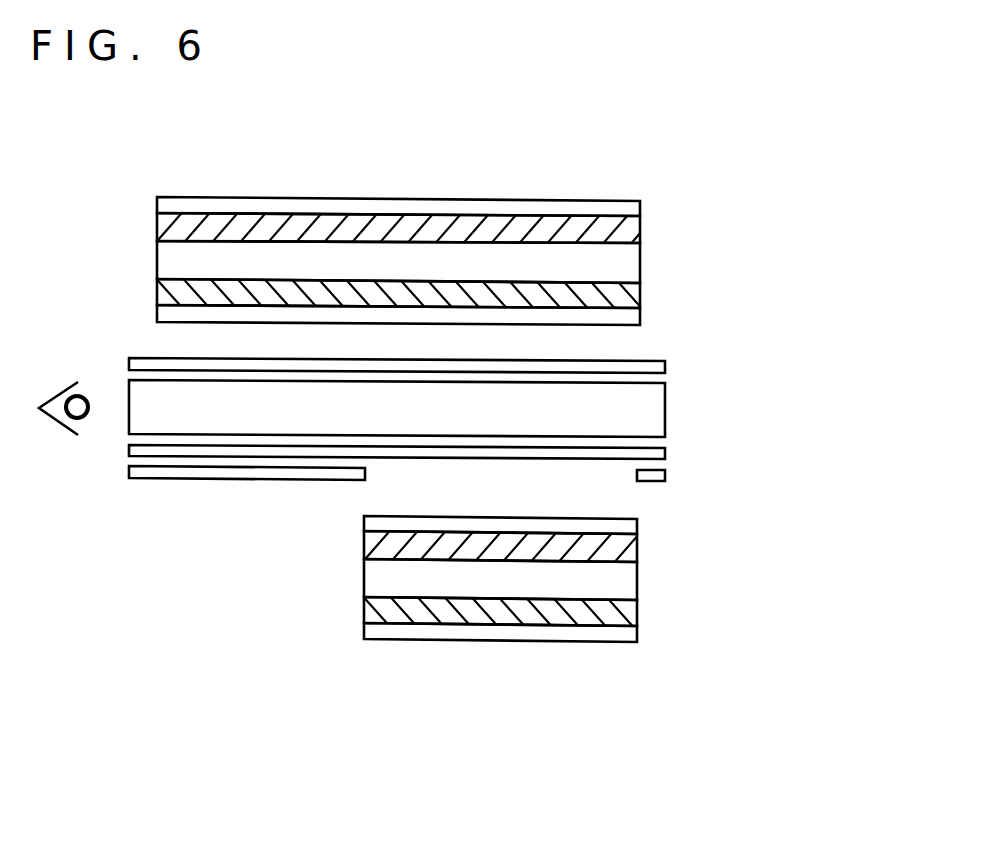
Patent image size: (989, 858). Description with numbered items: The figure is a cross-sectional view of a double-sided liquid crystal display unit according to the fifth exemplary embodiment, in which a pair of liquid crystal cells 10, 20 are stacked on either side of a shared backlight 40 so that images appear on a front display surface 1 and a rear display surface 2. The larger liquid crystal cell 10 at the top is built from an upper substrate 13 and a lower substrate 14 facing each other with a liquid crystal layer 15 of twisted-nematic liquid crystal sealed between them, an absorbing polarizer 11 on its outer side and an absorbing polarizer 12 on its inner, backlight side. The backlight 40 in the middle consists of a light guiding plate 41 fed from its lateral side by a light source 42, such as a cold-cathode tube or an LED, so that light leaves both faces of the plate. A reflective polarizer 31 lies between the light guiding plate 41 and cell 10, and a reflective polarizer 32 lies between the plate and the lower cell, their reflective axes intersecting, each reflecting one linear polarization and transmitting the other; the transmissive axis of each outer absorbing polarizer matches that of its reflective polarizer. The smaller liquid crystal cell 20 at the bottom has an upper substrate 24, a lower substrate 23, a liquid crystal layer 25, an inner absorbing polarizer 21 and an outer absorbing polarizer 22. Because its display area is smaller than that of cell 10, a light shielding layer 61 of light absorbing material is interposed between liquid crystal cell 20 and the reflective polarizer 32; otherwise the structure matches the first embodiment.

The display surface 1 is at (505, 225).
The liquid crystal cell 10 is at (505, 262).
The absorbing polarizer 11 is at (613, 207).
The absorbing polarizer 12 is at (468, 318).
The upper substrate 13 is at (613, 228).
The lower substrate 14 is at (613, 297).
The liquid crystal layer 15 is at (613, 265).
The display surface 2 is at (607, 619).
The liquid crystal cell 20 is at (607, 583).
The absorbing polarizer 21 is at (610, 523).
The absorbing polarizer 22 is at (570, 637).
The lower substrate 23 is at (610, 543).
The upper substrate 24 is at (610, 613).
The liquid crystal layer 25 is at (610, 577).
The reflective polarizer 31 is at (637, 368).
The reflective polarizer 32 is at (637, 453).
The backlight 40 is at (511, 409).
The light guiding plate 41 is at (637, 416).
The light source 42 is at (63, 430).
The light shielding layer 61 is at (650, 475).